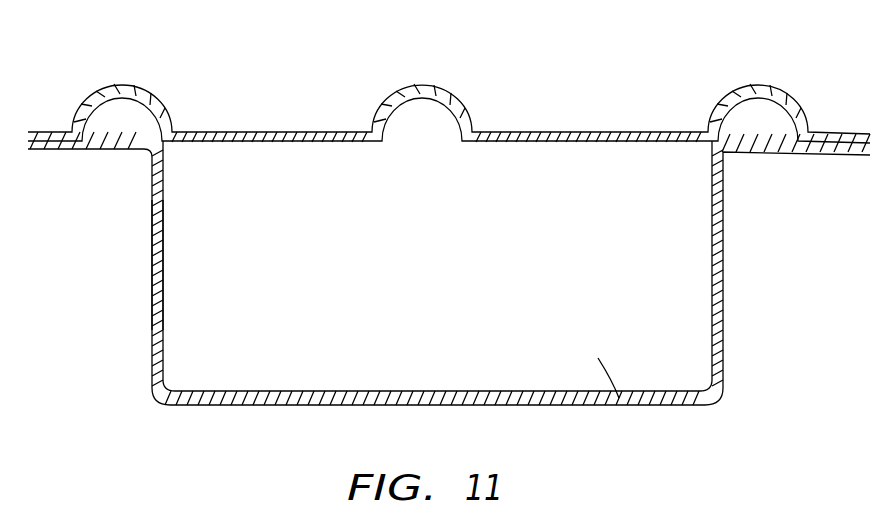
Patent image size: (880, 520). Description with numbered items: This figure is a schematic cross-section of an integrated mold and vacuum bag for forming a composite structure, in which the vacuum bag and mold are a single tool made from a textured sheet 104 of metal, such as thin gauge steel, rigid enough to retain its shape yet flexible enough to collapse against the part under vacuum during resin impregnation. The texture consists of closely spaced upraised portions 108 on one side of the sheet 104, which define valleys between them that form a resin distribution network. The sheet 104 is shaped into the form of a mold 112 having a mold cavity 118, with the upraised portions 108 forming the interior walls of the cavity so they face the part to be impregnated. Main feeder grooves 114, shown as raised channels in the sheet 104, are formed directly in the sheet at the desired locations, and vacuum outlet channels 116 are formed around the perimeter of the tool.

The textured sheet 104 is at (552, 128).
The upraised portions 108 is at (303, 142).
The mold 112 is at (150, 310).
The main feeder grooves 114 is at (428, 86).
The vacuum outlet channels 116 is at (122, 85).
The mold cavity 118 is at (598, 358).